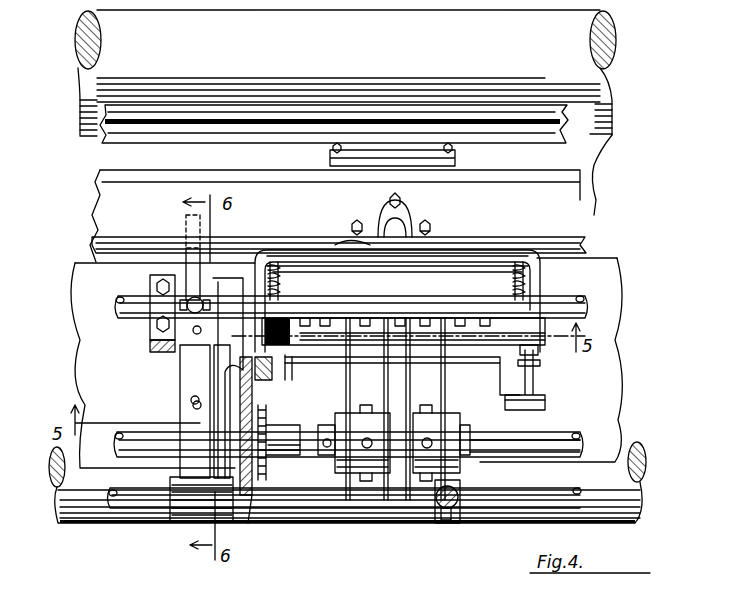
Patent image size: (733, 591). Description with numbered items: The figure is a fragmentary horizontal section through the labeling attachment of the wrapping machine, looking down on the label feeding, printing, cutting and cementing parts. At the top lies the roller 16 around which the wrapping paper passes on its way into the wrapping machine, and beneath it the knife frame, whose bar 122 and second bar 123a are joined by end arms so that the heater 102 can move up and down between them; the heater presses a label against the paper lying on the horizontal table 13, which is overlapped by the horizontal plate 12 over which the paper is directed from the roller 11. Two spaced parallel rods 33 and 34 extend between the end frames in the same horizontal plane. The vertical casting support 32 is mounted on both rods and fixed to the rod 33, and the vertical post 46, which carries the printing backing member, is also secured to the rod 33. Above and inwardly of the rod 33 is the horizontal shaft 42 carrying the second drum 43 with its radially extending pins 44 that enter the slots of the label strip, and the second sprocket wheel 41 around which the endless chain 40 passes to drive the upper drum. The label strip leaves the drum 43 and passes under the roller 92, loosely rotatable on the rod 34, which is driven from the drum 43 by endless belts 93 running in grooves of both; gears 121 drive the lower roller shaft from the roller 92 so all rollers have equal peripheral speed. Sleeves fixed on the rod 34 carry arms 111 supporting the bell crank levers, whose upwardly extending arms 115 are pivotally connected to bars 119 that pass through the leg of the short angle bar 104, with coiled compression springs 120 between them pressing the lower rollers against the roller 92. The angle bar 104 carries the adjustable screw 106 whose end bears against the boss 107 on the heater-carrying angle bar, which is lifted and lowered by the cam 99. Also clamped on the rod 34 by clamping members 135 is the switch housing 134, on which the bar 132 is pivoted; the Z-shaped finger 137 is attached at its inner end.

The roller 16 is at (585, 48).
The bar 122 is at (355, 120).
The horizontal table 13 is at (583, 153).
The heater 102 is at (328, 157).
The cam 99 is at (470, 205).
The boss 107 is at (405, 220).
The adjustable screw 106 is at (340, 245).
The second bar 123a is at (585, 242).
The horizontal plate 12 is at (610, 372).
The Z-shaped finger 137 is at (175, 242).
The clamping members 135 is at (155, 290).
The rod 34 is at (585, 292).
The switch housing 134 is at (185, 372).
The gears 121 is at (228, 378).
The bar 132 is at (195, 408).
The horizontal shaft 42 is at (535, 440).
The roller 11 is at (405, 520).
The rod 33 is at (345, 500).
The vertical post 46 is at (440, 522).
The short angle bar 104 is at (480, 292).
The coiled compression springs 120 is at (282, 282).
The bars 119 is at (296, 330).
The roller 92 is at (400, 330).
The endless belts 93 is at (330, 385).
The pins 44 is at (367, 443).
The second drum 43 is at (460, 428).
The upwardly extending arm 115 is at (540, 375).
The arms 111 is at (542, 404).
The vertical casting support 32 is at (244, 510).
The endless chain 40 is at (266, 410).
The second sprocket wheel 41 is at (282, 462).